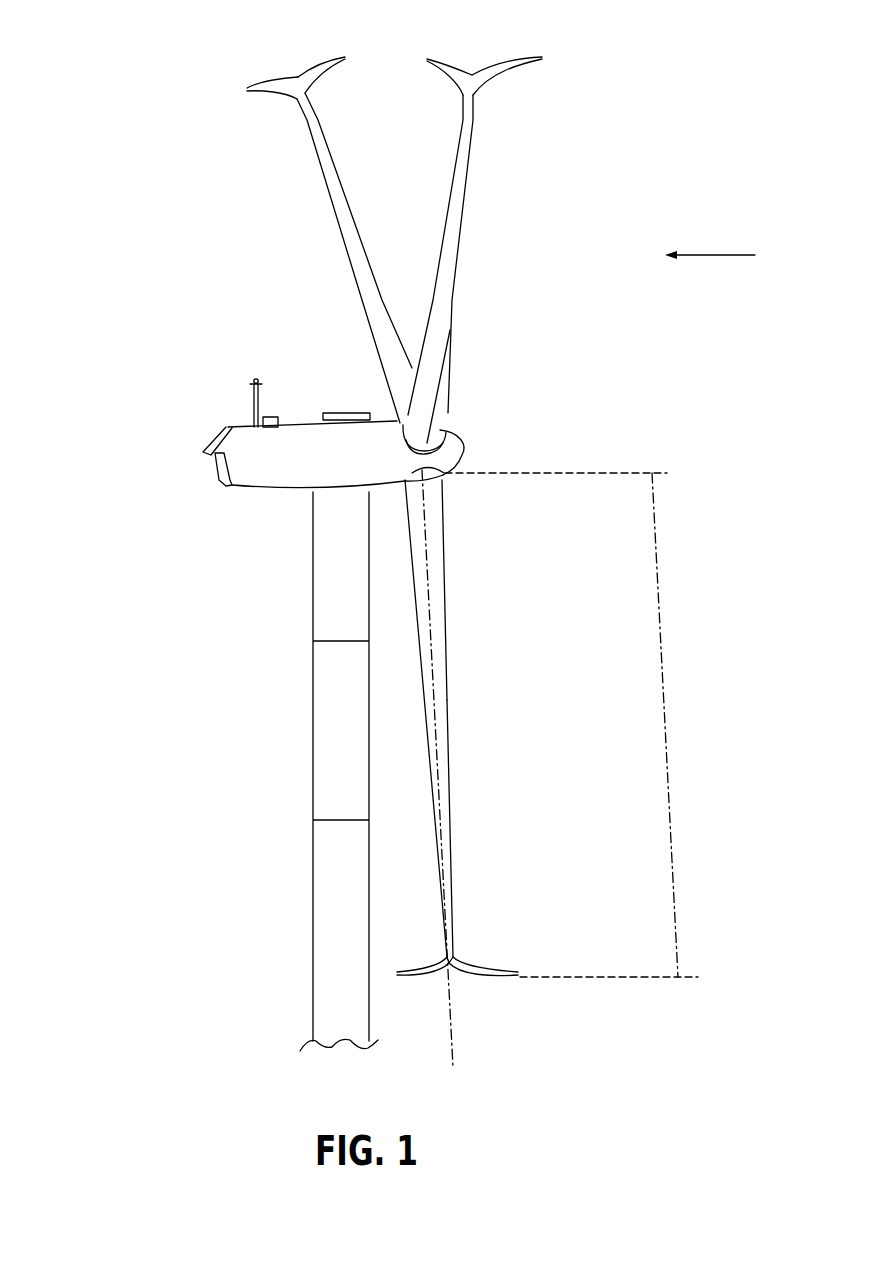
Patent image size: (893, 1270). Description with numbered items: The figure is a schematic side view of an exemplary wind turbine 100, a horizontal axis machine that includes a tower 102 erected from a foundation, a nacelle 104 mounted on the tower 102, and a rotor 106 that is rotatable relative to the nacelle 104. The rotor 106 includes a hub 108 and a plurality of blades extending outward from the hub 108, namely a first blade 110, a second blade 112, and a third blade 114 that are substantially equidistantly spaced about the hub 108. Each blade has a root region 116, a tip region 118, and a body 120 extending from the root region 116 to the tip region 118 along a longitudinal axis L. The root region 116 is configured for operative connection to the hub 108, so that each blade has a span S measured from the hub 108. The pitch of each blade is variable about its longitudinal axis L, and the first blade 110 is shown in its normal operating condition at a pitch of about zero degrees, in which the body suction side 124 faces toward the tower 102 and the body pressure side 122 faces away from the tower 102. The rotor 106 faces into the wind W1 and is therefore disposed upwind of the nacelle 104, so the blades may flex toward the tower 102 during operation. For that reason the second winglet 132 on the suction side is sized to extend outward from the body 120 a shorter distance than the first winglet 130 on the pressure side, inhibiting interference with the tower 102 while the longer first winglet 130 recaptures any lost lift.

The wind turbine 100 is at (172, 87).
The tower 102 is at (313, 744).
The nacelle 104 is at (213, 467).
The rotor 106 is at (508, 264).
The hub 108 is at (446, 432).
The first blade 110 is at (450, 590).
The second blade 112 is at (352, 206).
The third blade 114 is at (473, 158).
The root region 116 is at (444, 474).
The tip region 118 is at (466, 967).
The body 120 is at (443, 738).
The body pressure side 122 is at (443, 669).
The body suction side 124 is at (423, 717).
The first winglet 130 is at (505, 970).
The second winglet 132 is at (418, 968).
The longitudinal axis L is at (448, 771).
The span S is at (664, 684).
The wind W1 is at (711, 239).